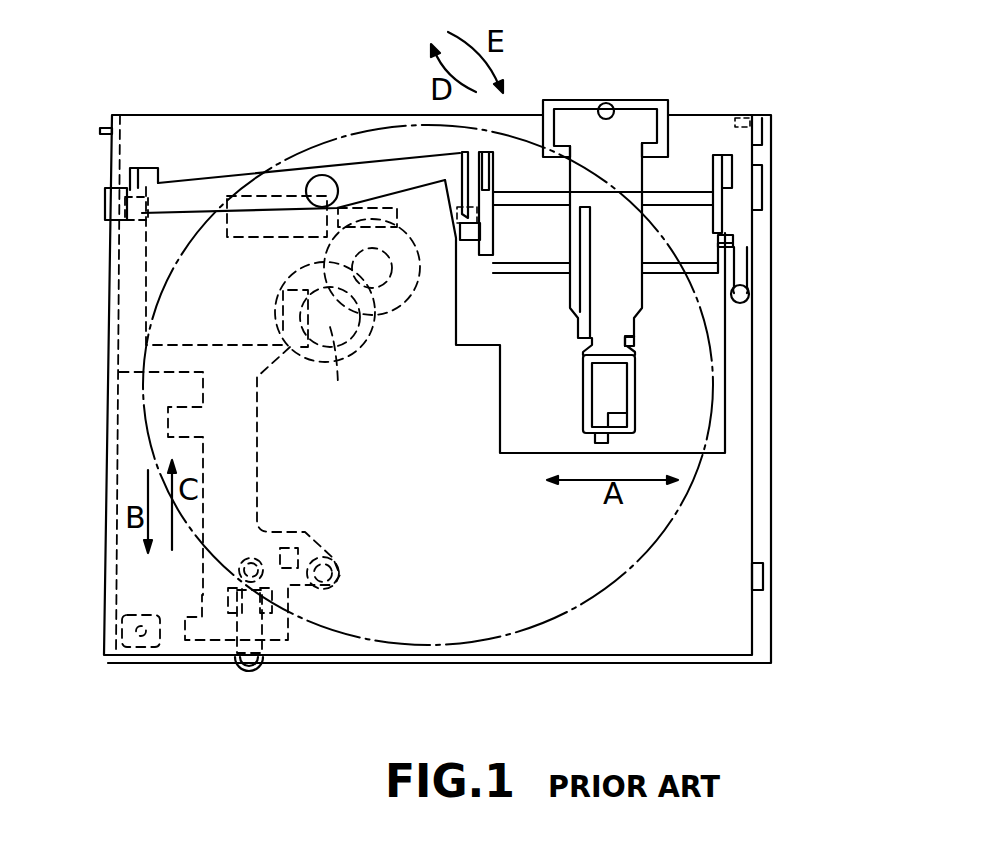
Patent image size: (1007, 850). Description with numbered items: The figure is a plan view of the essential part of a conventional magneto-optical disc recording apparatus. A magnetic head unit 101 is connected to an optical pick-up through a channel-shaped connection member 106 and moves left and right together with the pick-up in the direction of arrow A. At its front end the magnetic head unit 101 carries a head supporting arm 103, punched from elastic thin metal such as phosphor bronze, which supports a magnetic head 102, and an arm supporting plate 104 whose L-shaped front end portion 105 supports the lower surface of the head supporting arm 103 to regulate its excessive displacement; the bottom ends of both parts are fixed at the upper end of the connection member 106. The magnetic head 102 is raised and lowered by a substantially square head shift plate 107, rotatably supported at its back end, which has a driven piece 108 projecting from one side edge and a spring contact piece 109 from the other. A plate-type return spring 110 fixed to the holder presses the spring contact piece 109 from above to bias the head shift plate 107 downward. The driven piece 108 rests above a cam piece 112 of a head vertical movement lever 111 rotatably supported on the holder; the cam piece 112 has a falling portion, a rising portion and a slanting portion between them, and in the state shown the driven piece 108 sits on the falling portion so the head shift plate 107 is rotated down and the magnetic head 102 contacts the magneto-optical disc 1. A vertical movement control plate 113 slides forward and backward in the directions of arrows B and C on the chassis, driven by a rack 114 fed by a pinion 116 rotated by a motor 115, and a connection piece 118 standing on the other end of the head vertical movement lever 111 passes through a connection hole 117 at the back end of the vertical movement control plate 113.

The magneto-optical disc 1 is at (752, 434).
The magnetic head unit 101 is at (647, 122).
The magnetic head 102 is at (613, 393).
The head supporting arm 103 is at (617, 298).
The arm supporting plate 104 is at (577, 320).
The front end portion 105 is at (633, 337).
The connection member 106 is at (598, 100).
The head shift plate 107 is at (543, 250).
The driven piece 108 is at (457, 237).
The spring contact piece 109 is at (727, 232).
The return spring 110 is at (737, 245).
The head vertical movement lever 111 is at (385, 173).
The cam piece 112 is at (458, 236).
The vertical movement control plate 113 is at (253, 452).
The rack 114 is at (338, 388).
The motor 115 is at (290, 195).
The pinion 116 is at (385, 343).
The connection hole 117 is at (167, 160).
The connection piece 118 is at (105, 205).